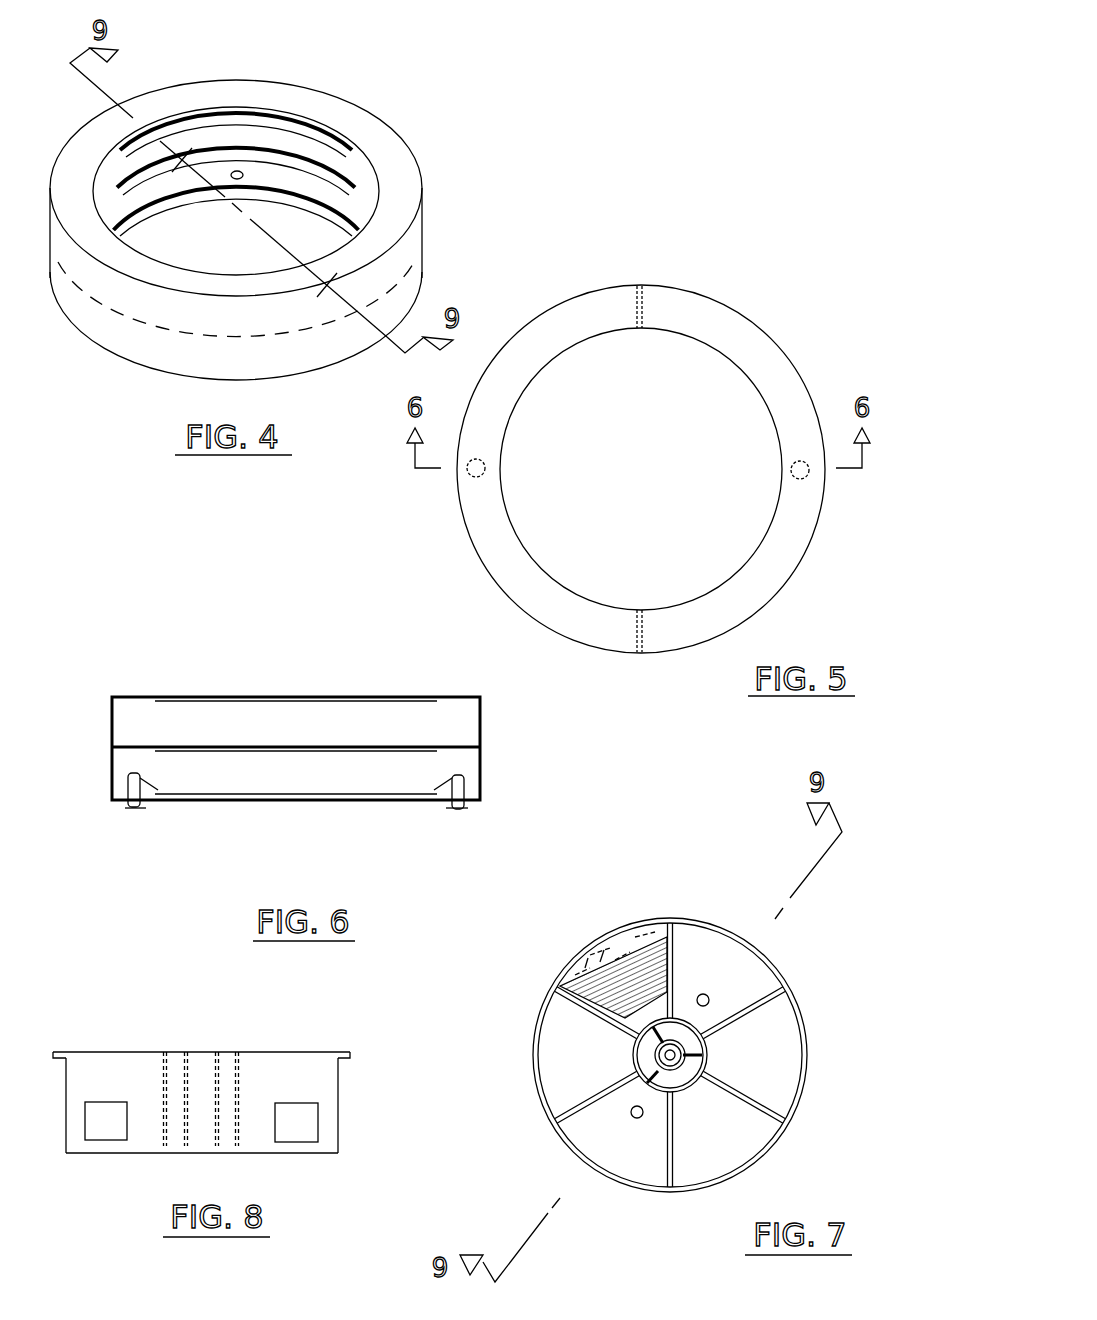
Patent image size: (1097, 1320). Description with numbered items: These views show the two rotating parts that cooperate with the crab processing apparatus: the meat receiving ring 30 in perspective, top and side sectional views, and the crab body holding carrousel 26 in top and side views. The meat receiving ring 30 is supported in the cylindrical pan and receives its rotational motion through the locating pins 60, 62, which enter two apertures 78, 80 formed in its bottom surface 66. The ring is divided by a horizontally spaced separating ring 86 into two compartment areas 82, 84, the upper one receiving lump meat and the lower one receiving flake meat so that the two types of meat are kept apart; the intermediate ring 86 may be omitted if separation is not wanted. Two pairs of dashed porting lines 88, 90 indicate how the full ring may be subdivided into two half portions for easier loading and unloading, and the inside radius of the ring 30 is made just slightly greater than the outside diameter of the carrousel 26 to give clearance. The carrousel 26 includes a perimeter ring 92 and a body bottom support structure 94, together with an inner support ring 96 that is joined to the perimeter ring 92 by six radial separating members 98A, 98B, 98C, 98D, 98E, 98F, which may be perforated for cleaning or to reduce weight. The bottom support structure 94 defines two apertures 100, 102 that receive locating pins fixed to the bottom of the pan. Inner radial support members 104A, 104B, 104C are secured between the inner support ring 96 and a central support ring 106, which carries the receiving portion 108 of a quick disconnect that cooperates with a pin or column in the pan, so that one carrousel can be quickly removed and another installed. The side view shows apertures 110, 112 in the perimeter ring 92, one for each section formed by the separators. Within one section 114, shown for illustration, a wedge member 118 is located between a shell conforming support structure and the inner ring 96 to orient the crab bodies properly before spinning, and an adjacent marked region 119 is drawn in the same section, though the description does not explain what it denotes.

In FIG. 8, the crab body holding carrousel 26 is at (310, 1043).
In FIG. 7, the crab body holding carrousel 26 is at (773, 940).
In FIG. 6, the meat receiving ring 30 is at (212, 692).
In FIG. 6, the locating pin 60 is at (140, 777).
In FIG. 6, the locating pin 62 is at (448, 778).
In FIG. 6, the bottom surface 66 is at (240, 798).
In FIG. 5, the aperture 78 is at (479, 459).
In FIG. 6, the aperture 78 is at (127, 800).
In FIG. 4, the aperture 80 is at (231, 178).
In FIG. 5, the aperture 80 is at (800, 478).
In FIG. 6, the aperture 80 is at (465, 790).
In FIG. 4, the compartment area 82 is at (277, 153).
In FIG. 6, the compartment area 82 is at (445, 722).
In FIG. 4, the compartment area 84 is at (183, 183).
In FIG. 6, the compartment area 84 is at (445, 765).
In FIG. 4, the separating ring 86 is at (195, 153).
In FIG. 6, the separating ring 86 is at (310, 748).
In FIG. 5, the dashed porting lines 88 is at (639, 285).
In FIG. 5, the dashed porting lines 90 is at (639, 653).
In FIG. 8, the perimeter ring 92 is at (340, 1103).
In FIG. 7, the perimeter ring 92 is at (801, 1010).
In FIG. 8, the body bottom support structure 94 is at (307, 1153).
In FIG. 7, the body bottom support structure 94 is at (763, 1057).
In FIG. 8, the inner support ring 96 is at (165, 1075).
In FIG. 7, the inner support ring 96 is at (636, 1060).
In FIG. 7, the radial separating member 98A is at (737, 1127).
In FIG. 7, the radial separating member 98B is at (753, 1020).
In FIG. 7, the radial separating member 98C is at (672, 942).
In FIG. 7, the radial separating member 98D is at (633, 1050).
In FIG. 7, the radial separating member 98E is at (620, 1100).
In FIG. 7, the radial separating member 98F is at (667, 1157).
In FIG. 7, the aperture 100 is at (632, 1118).
In FIG. 7, the aperture 102 is at (712, 990).
In FIG. 7, the inner radial support member 104A is at (709, 995).
In FIG. 7, the inner radial support member 104B is at (697, 1092).
In FIG. 7, the inner radial support member 104C is at (677, 1093).
In FIG. 8, the central support ring 106 is at (230, 1062).
In FIG. 8, the receiving portion of quick disconnect 108 is at (217, 1062).
In FIG. 7, the receiving portion of quick disconnect 108 is at (665, 1055).
In FIG. 8, the aperture 110 is at (118, 1127).
In FIG. 8, the aperture 112 is at (310, 1128).
In FIG. 7, the section 114 is at (683, 996).
In FIG. 7, the wedge member 118 is at (600, 992).
In FIG. 7, the cut-out region 119 is at (605, 937).